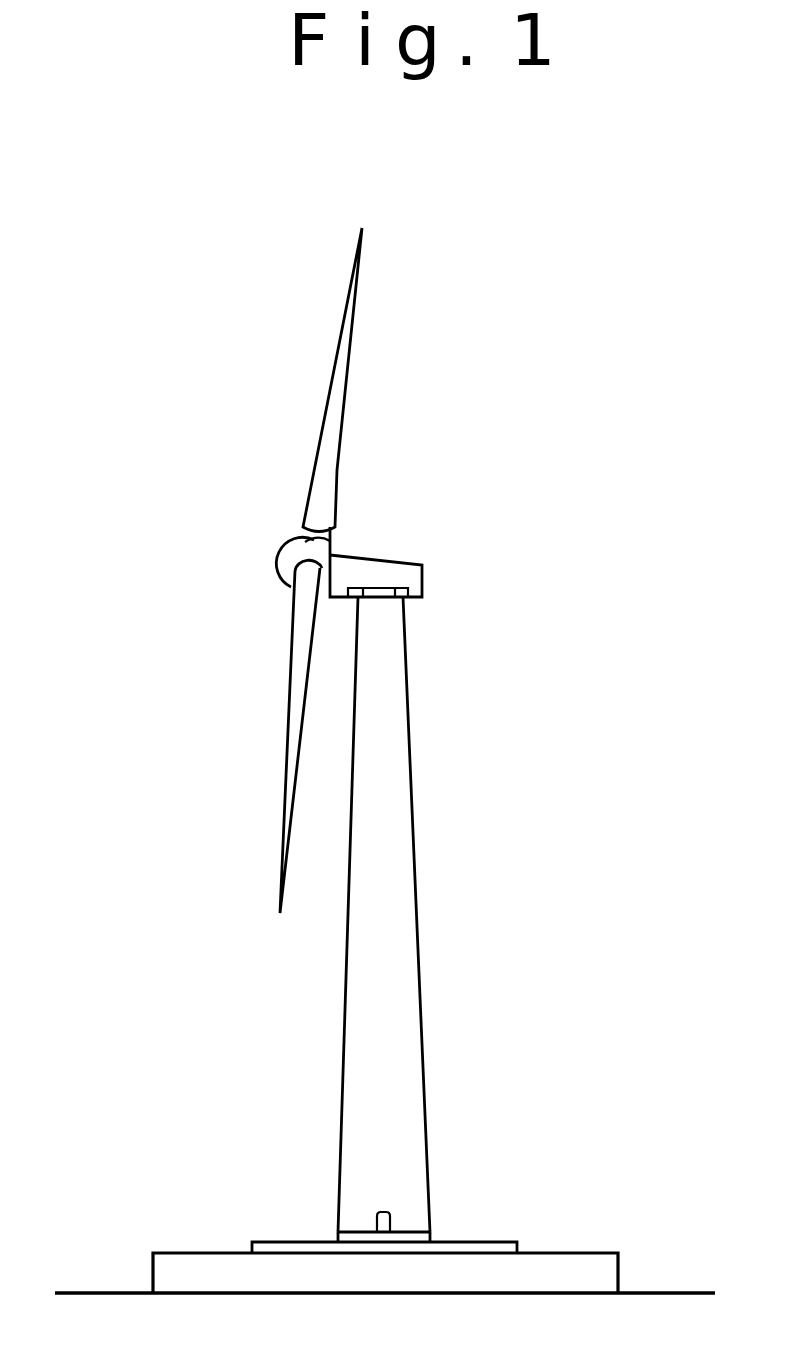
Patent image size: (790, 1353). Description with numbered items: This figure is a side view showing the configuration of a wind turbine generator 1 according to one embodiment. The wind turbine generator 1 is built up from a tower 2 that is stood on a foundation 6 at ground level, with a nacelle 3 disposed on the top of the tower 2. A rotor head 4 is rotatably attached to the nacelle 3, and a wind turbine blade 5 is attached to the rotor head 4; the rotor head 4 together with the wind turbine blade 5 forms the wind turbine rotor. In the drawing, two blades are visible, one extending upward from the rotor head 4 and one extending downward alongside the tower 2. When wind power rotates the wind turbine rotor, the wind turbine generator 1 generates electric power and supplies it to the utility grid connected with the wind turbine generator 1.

The wind turbine generator 1 is at (643, 477).
The tower 2 is at (413, 835).
The nacelle 3 is at (391, 549).
The rotor head 4 is at (273, 562).
The wind turbine blade 5 is at (333, 367).
The foundation 6 is at (562, 1262).